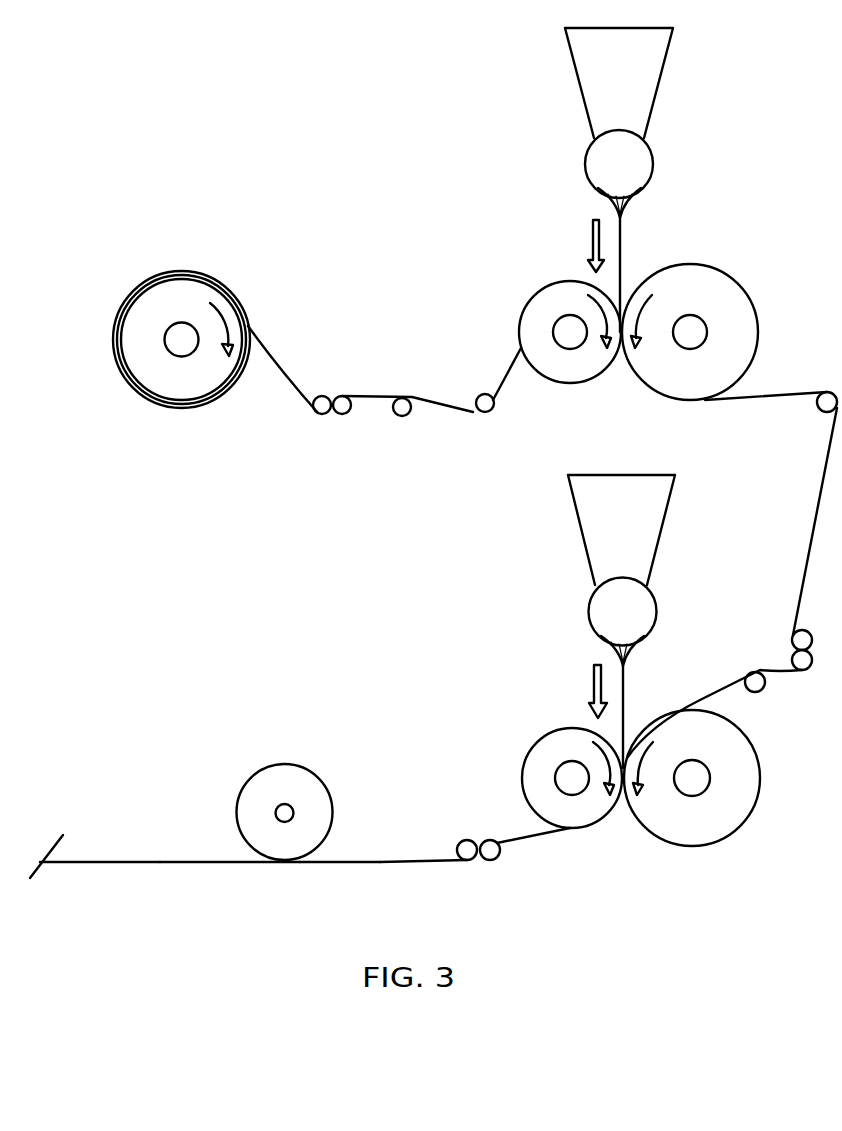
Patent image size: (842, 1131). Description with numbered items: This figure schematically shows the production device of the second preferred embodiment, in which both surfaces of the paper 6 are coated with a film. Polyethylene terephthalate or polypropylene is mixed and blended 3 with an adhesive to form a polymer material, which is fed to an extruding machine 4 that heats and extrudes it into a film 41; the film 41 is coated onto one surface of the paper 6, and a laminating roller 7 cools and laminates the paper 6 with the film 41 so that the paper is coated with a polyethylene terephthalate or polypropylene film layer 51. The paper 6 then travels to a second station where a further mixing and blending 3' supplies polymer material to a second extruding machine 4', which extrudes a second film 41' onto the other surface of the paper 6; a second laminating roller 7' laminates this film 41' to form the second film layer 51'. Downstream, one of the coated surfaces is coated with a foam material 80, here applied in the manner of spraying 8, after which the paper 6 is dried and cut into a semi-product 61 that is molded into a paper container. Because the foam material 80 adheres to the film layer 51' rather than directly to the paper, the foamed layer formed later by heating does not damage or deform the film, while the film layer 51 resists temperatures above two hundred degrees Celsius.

The mixing and blending 3 is at (652, 79).
The extruding machine 4 is at (646, 159).
The film 41 is at (641, 260).
The laminating roller 7 is at (641, 319).
The paper 6 is at (222, 337).
The mixing and blending 3' is at (652, 530).
The extruding machine 4' is at (660, 602).
The film 41' is at (645, 702).
The laminating roller 7' is at (651, 775).
The spraying 8 is at (214, 800).
The foam material 80 is at (96, 843).
The semi-product 61 is at (230, 882).
The polyethylene terephthalate or polypropylene film layer 51 is at (366, 880).
The polyethylene terephthalate or polypropylene film layer 51' is at (423, 830).